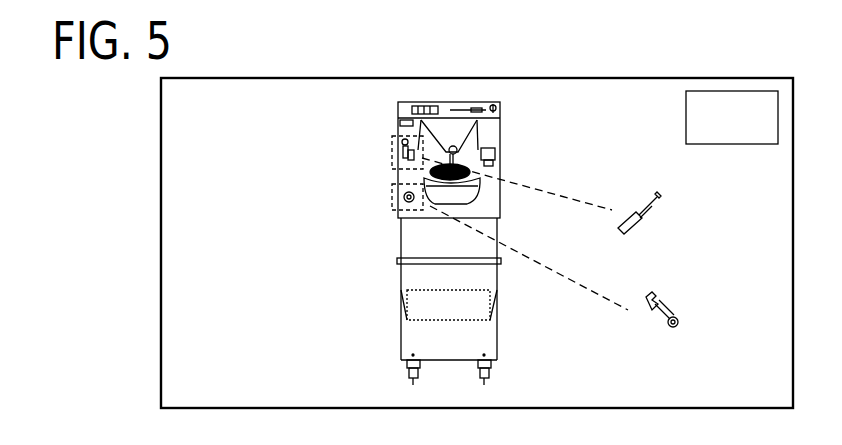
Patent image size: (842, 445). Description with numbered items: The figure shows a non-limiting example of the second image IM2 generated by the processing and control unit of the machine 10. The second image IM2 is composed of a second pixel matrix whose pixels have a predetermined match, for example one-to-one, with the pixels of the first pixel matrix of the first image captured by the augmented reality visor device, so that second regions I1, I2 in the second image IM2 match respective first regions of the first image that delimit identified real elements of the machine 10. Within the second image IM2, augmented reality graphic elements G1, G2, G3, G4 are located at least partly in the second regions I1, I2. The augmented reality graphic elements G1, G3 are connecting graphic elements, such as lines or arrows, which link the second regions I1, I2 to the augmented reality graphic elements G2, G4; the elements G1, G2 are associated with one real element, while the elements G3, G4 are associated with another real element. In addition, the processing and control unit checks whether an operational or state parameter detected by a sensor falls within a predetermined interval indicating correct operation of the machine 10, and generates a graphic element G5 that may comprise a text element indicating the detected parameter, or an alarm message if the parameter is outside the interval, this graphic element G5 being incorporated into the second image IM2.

The machine 10 is at (514, 129).
The second image IM2 is at (620, 98).
The second region I1 is at (392, 150).
The second region I2 is at (392, 200).
The augmented reality graphic element G1 is at (556, 190).
The augmented reality graphic element G2 is at (638, 228).
The augmented reality graphic element G3 is at (579, 284).
The augmented reality graphic element G4 is at (662, 305).
The graphic element G5 is at (738, 91).